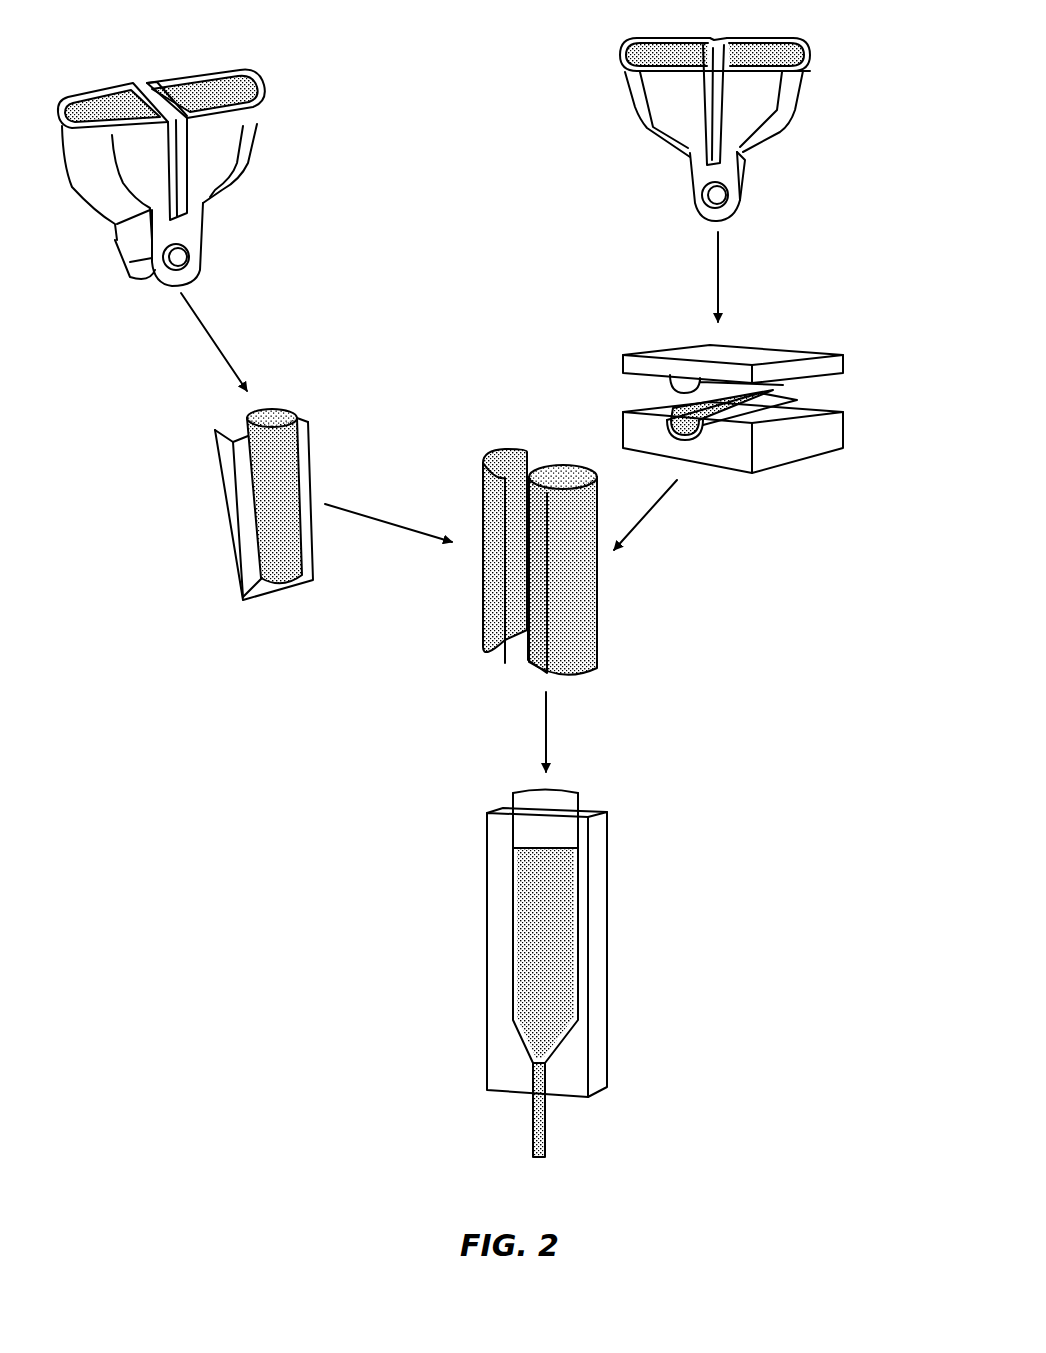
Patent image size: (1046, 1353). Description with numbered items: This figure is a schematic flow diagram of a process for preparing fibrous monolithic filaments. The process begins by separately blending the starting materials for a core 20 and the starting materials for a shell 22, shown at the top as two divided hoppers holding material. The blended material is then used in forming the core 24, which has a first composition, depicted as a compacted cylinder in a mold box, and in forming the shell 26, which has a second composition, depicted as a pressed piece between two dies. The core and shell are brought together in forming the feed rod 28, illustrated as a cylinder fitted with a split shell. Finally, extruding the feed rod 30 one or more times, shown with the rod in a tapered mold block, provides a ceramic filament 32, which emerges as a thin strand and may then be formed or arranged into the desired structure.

The blending of starting materials for the core 20 is at (130, 87).
The blending of starting materials for the shell 22 is at (710, 36).
The forming the core 24 is at (272, 408).
The forming the shell 26 is at (800, 400).
The forming the feed rod 28 is at (572, 652).
The extruding the feed rod 30 is at (585, 927).
The ceramic filament 32 is at (546, 1122).